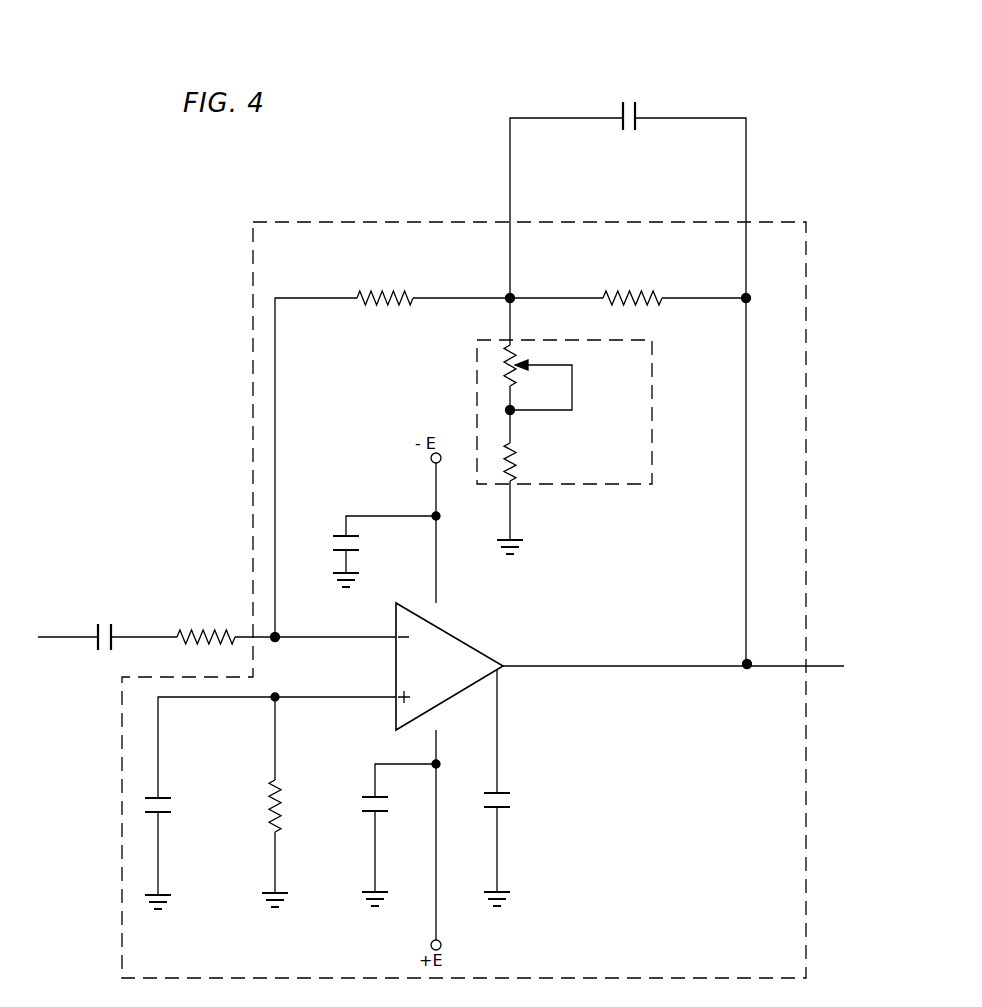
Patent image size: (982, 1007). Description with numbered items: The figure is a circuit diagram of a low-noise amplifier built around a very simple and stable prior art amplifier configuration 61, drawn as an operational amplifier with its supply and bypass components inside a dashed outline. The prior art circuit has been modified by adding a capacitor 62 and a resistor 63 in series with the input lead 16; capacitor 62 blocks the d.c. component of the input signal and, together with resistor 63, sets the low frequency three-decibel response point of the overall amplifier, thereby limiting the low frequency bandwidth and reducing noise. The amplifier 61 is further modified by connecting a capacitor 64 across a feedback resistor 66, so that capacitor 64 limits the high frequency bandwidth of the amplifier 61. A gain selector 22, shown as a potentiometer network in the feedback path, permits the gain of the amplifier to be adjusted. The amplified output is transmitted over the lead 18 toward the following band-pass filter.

The input lead 16 is at (58, 642).
The lead 18 is at (775, 663).
The gain selector 22 is at (592, 485).
The amplifier configuration 61 is at (378, 221).
The capacitor 62 is at (95, 632).
The resistor 63 is at (202, 634).
The capacitor 64 is at (637, 113).
The feedback resistor 66 is at (627, 292).